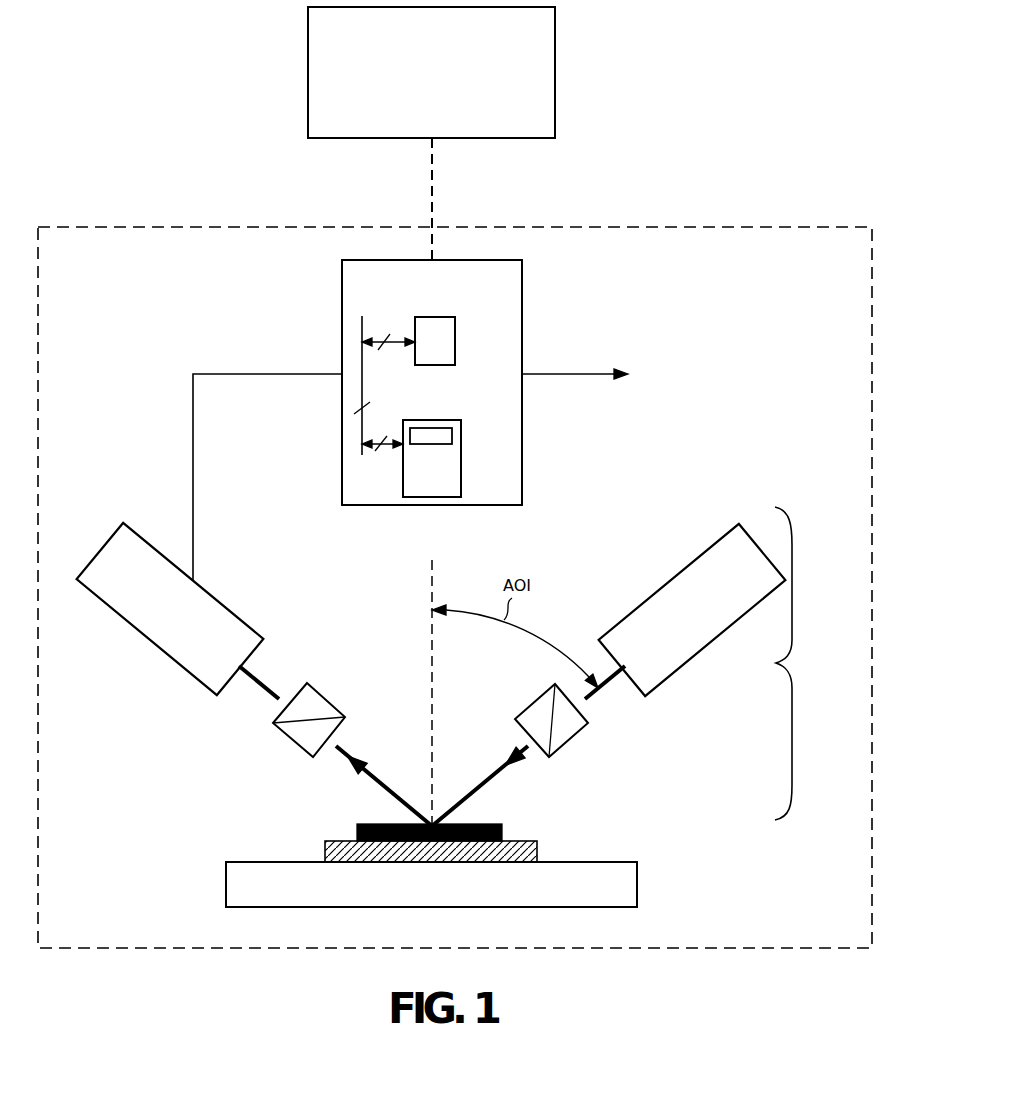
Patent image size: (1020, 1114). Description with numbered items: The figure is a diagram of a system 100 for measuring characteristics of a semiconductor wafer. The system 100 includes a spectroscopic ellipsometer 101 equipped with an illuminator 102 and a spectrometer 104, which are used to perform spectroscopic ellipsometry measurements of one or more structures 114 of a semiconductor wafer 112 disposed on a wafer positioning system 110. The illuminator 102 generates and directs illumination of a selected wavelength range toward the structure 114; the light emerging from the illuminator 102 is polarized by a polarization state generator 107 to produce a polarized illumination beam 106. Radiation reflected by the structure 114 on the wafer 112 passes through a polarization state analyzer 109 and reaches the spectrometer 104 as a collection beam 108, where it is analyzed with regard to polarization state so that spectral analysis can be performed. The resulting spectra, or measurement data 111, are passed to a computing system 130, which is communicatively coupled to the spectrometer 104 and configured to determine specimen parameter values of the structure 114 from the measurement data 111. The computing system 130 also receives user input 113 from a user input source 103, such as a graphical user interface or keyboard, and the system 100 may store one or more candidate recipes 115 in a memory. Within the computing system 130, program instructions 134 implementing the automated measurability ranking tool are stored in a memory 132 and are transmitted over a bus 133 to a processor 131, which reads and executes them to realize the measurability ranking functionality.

The system 100 is at (153, 227).
The spectroscopic ellipsometer 101 is at (778, 663).
The illuminator 102 is at (660, 585).
The user input source 103 is at (416, 108).
The spectrometer 104 is at (232, 612).
The polarized illumination beam 106 is at (481, 782).
The polarization state generator 107 is at (530, 700).
The collection beam 108 is at (372, 778).
The polarization state analyzer 109 is at (335, 704).
The wafer positioning system 110 is at (638, 882).
The measurement data 111 is at (182, 449).
The semiconductor wafer 112 is at (538, 851).
The user input 113 is at (448, 155).
The structure 114 is at (503, 828).
The candidate recipes 115 is at (545, 357).
The computing system 130 is at (419, 288).
The processor 131 is at (456, 342).
The memory 132 is at (403, 484).
The bus 133 is at (364, 380).
The program instructions 134 is at (453, 436).